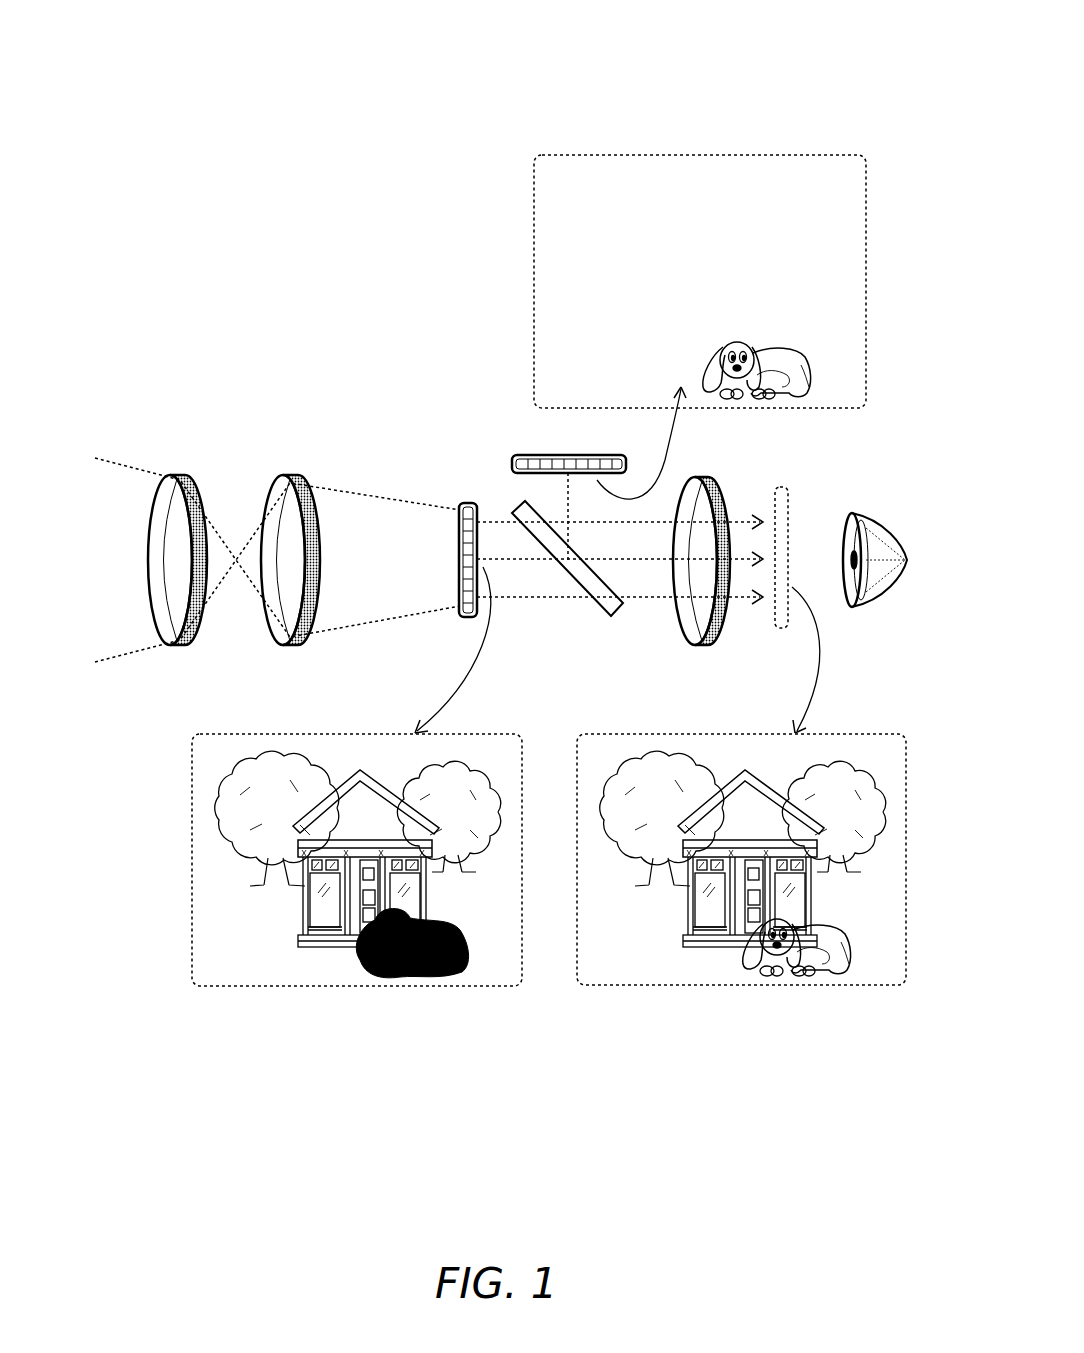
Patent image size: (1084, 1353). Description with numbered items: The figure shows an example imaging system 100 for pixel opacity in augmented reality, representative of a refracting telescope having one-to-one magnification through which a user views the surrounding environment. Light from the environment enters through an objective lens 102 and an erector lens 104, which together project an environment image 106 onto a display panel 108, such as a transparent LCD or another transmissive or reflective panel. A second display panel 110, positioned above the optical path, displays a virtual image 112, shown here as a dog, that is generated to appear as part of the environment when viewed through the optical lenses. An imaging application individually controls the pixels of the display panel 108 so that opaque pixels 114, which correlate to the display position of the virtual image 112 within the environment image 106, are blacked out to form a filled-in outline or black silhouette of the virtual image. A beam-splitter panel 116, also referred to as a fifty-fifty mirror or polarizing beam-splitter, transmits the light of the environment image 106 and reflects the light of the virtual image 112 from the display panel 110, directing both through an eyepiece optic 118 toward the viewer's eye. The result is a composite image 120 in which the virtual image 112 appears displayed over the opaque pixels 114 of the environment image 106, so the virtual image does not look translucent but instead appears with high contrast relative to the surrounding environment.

The imaging system 100 is at (785, 72).
The objective lens 102 is at (180, 476).
The erector lens 104 is at (290, 476).
The environment image 106 is at (250, 985).
The display panel 108 is at (462, 505).
The display panel 110 is at (532, 457).
The virtual image 112 is at (534, 298).
The opaque pixels 114 is at (395, 975).
The beam-splitter panel 116 is at (605, 614).
The eyepiece optic 118 is at (683, 632).
The composite image 120 is at (655, 985).